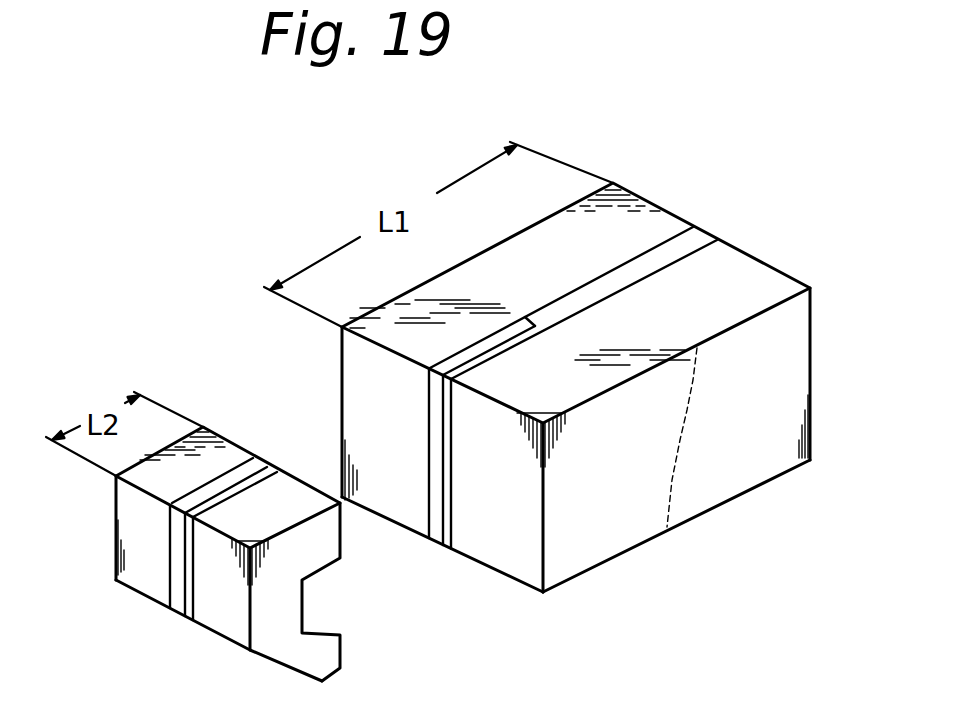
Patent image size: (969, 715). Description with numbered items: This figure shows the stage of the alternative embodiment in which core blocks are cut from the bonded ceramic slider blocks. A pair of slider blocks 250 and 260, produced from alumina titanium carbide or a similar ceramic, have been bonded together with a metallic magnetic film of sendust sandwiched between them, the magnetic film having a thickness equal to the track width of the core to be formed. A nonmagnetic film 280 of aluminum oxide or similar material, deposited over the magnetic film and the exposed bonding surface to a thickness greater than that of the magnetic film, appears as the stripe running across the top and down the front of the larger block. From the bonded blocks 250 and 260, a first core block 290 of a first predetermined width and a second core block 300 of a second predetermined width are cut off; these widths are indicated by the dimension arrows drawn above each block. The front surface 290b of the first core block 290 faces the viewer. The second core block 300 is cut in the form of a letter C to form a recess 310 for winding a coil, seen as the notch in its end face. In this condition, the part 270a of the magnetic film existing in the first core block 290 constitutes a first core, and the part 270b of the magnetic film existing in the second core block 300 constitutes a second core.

The slider block 250 is at (618, 217).
The nonmagnetic film 280 is at (700, 243).
The slider block 260 is at (757, 277).
The part of the magnetic film 270a is at (437, 527).
The first core block 290 is at (713, 521).
The front surface of large case 290b is at (518, 535).
The second core block 300 is at (106, 538).
The part of the magnetic film 270b is at (180, 598).
The recess 310 is at (305, 619).